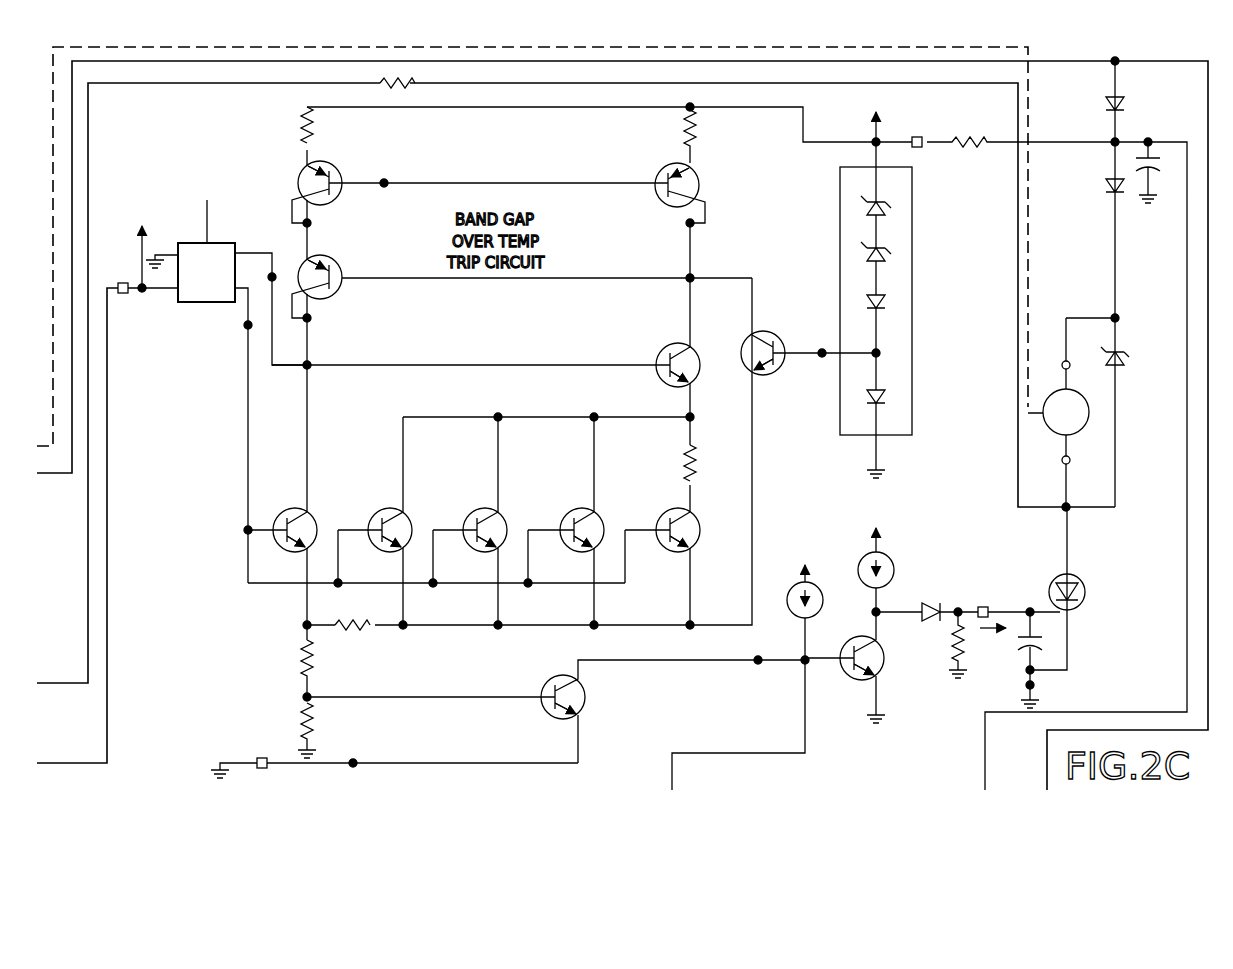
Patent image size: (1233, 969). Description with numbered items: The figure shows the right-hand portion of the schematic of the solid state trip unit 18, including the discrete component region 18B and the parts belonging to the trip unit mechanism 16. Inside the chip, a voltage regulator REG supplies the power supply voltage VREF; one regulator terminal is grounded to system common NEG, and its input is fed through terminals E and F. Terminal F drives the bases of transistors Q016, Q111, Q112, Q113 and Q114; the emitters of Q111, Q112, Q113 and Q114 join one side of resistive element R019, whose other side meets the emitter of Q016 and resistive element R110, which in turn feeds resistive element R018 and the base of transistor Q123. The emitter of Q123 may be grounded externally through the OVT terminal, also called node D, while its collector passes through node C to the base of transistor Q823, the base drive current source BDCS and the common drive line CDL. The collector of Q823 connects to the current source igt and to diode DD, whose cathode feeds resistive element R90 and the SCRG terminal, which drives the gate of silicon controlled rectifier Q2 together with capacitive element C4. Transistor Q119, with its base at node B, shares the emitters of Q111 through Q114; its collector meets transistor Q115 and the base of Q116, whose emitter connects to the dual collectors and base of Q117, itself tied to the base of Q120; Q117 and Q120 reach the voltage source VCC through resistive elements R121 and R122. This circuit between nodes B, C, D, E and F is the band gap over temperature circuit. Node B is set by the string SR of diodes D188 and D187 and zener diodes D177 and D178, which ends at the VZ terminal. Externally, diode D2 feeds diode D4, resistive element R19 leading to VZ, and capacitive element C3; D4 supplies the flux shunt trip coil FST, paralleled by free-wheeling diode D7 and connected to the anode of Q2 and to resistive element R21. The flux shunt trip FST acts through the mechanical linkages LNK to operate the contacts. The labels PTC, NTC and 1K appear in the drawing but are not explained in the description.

The resistive element R21 is at (420, 90).
The resistive element R121 is at (300, 130).
The transistor Q117 is at (338, 168).
The transistor Q116 is at (338, 295).
The transistor Q120 is at (666, 206).
The resistive element R122 is at (698, 138).
The solid state trip unit 18 is at (788, 208).
The transistor Q115 is at (662, 345).
The transistor Q119 is at (776, 332).
The node B is at (822, 358).
The diode string arrangement SR is at (840, 422).
The second zener diode D178 is at (891, 208).
The zener diode D177 is at (891, 254).
The diode D187 is at (888, 300).
The diode D188 is at (886, 398).
The voltage source VCC is at (549, 336).
The VREF terminal VREF is at (140, 322).
The voltage regulator REG is at (206, 272).
The node E is at (274, 275).
The node F is at (246, 326).
The transistor Q016 is at (310, 516).
The transistor Q111 is at (405, 516).
The transistor Q112 is at (505, 516).
The transistor Q113 is at (598, 516).
The transistor Q114 is at (700, 516).
The resistive element R110 is at (300, 652).
The resistive element R019 is at (372, 628).
The resistive element R018 is at (300, 703).
The positive temperature coefficient thermistor PTC is at (345, 711).
The OVT terminal OVT is at (262, 757).
The node D is at (356, 760).
The negative temperature coefficient thermistor NTC is at (531, 749).
The transistor Q123 is at (588, 700).
The node C is at (758, 663).
The common drive line CDL is at (735, 752).
The base drive current source BDCS is at (791, 617).
The current source igt is at (893, 568).
The transistor Q823 is at (880, 676).
The node 1K is at (899, 601).
The diode DD is at (935, 602).
The resistive element R90 is at (950, 645).
The SCRG terminal SCRG is at (983, 607).
The silicon controlled rectifier Q2 is at (1084, 604).
The capacitive element C4 is at (1016, 648).
The system common or ground NEG is at (1038, 688).
The mechanical linkages LNK is at (1032, 80).
The diode D2 is at (1104, 103).
The discrete component region 18B is at (1085, 182).
The diode D4 is at (1108, 195).
The capacitive element C3 is at (1163, 168).
The free-wheeling diode D7 is at (1126, 358).
The flux shunt trip unit FST is at (1052, 430).
The trip unit mechanism 16 is at (1160, 489).
The resistive element R19 is at (968, 125).
The VZ terminal VZ is at (918, 148).